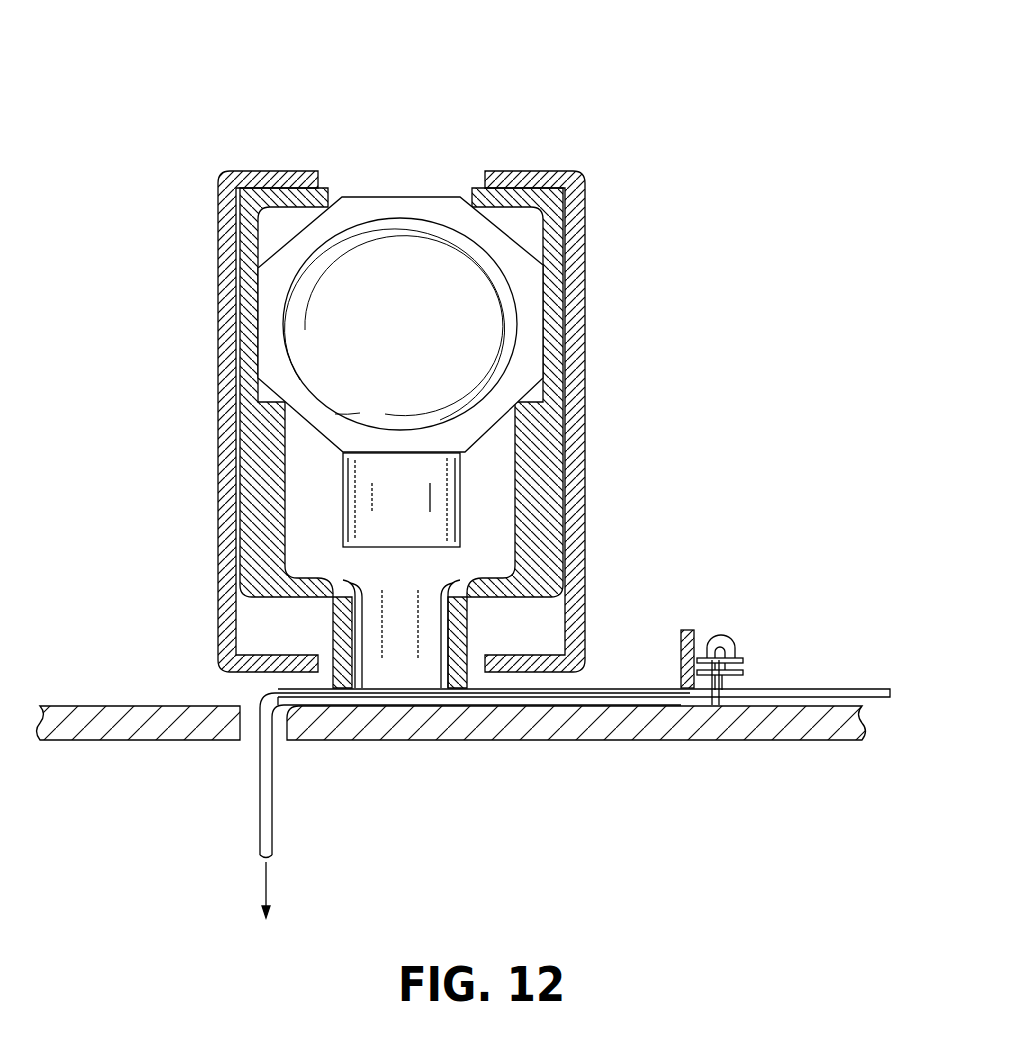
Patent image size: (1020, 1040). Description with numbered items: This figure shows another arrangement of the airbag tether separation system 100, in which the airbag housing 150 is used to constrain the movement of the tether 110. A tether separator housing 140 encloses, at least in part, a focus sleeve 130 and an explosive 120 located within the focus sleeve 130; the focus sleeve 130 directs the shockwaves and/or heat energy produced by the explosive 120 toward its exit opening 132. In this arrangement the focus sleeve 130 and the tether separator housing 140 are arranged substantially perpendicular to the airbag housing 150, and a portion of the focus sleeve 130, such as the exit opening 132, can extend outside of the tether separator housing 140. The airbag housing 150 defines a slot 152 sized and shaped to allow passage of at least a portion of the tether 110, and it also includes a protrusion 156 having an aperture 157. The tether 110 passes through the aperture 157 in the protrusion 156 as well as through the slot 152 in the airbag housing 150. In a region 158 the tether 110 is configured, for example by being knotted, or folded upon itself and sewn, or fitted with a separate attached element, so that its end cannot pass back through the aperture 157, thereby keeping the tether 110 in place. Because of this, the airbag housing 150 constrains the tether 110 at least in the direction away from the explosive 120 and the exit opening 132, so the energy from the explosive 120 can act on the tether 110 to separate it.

The airbag tether separation system 100 is at (170, 60).
The tether 110 is at (832, 692).
The explosive 120 is at (537, 291).
The focus sleeve 130 is at (540, 481).
The exit opening 132 is at (400, 698).
The tether separator housing 140 is at (578, 355).
The airbag housing 150 is at (527, 742).
The slot 152 is at (286, 754).
The protrusion 156 is at (697, 632).
The aperture 157 is at (675, 680).
The region 158 is at (752, 664).